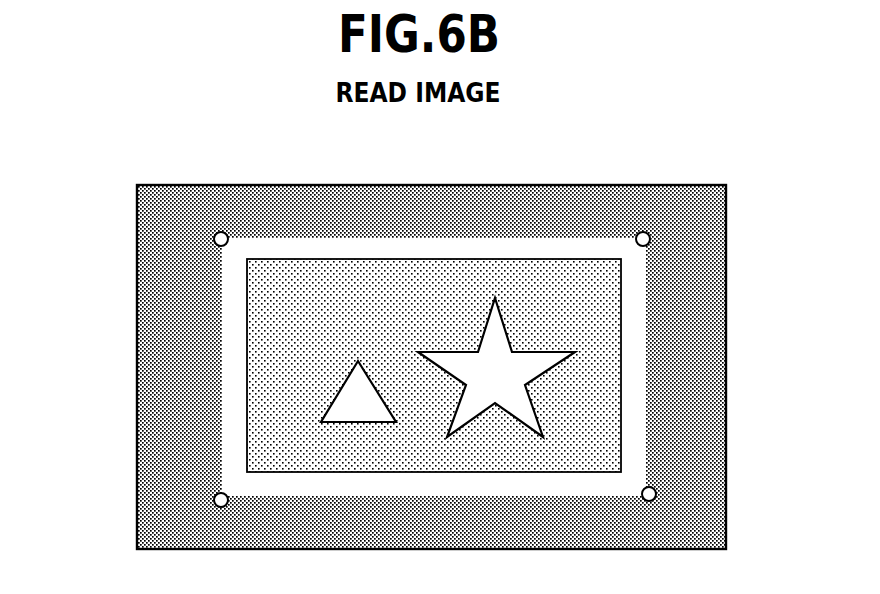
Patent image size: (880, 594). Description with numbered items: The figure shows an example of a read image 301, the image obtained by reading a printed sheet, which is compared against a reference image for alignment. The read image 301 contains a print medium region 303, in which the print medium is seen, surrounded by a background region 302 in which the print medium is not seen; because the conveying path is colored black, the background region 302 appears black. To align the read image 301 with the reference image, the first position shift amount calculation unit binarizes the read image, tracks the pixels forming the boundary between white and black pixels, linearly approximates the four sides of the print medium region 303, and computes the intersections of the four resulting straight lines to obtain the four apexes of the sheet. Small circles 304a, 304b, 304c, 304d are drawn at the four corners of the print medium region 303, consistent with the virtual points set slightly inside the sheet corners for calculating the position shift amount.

The read image 301 is at (201, 185).
The background region 302 is at (297, 204).
The print medium region 303 is at (413, 238).
The position marker 304a is at (214, 240).
The position marker 304b is at (650, 238).
The position marker 304c is at (214, 501).
The position marker 304d is at (656, 493).